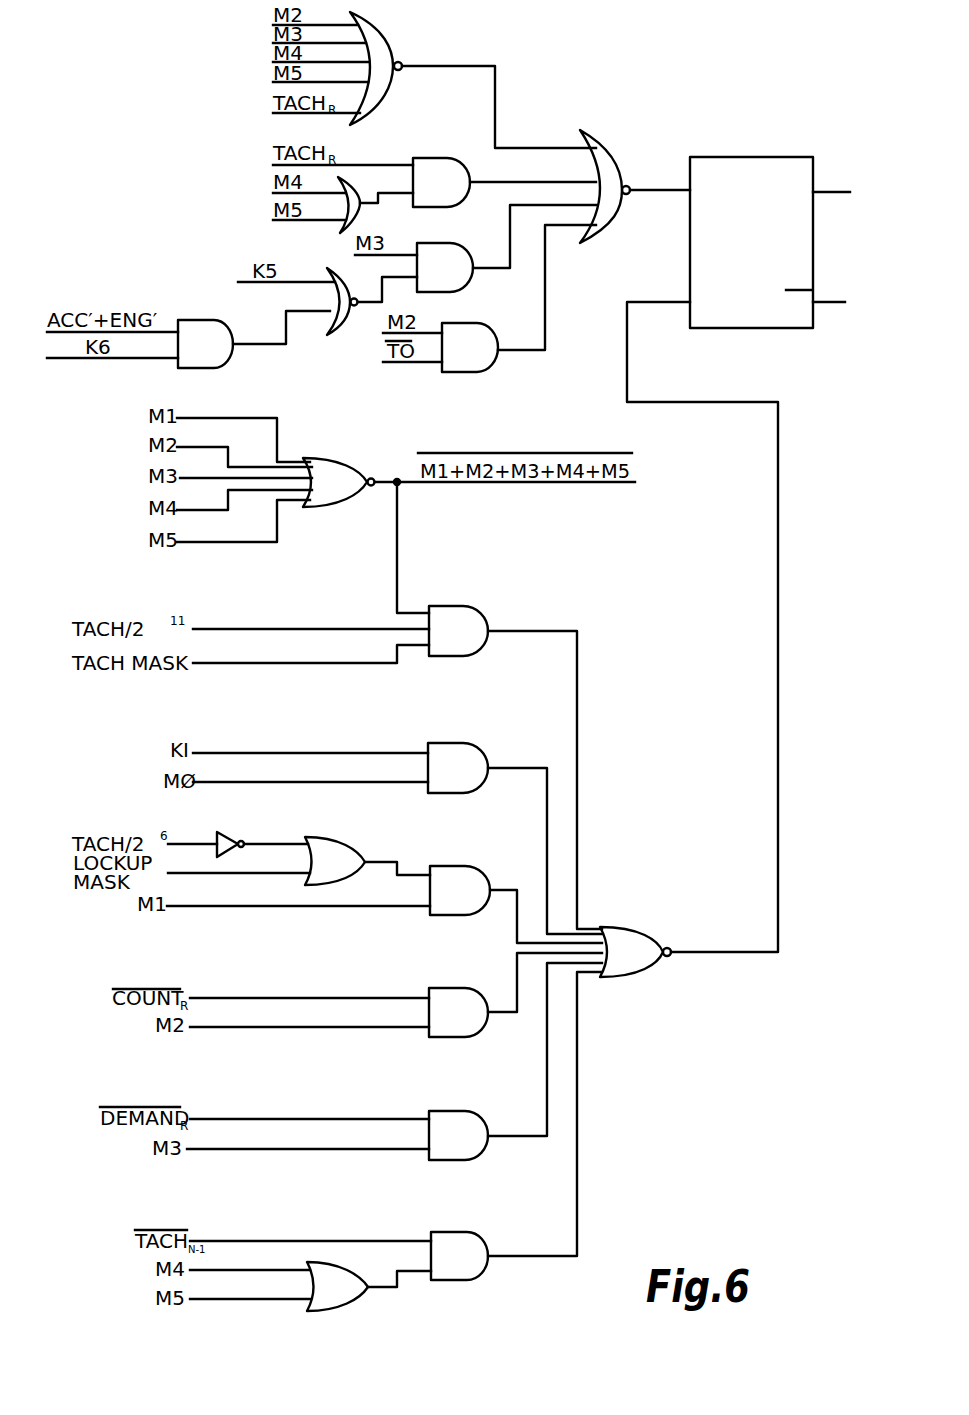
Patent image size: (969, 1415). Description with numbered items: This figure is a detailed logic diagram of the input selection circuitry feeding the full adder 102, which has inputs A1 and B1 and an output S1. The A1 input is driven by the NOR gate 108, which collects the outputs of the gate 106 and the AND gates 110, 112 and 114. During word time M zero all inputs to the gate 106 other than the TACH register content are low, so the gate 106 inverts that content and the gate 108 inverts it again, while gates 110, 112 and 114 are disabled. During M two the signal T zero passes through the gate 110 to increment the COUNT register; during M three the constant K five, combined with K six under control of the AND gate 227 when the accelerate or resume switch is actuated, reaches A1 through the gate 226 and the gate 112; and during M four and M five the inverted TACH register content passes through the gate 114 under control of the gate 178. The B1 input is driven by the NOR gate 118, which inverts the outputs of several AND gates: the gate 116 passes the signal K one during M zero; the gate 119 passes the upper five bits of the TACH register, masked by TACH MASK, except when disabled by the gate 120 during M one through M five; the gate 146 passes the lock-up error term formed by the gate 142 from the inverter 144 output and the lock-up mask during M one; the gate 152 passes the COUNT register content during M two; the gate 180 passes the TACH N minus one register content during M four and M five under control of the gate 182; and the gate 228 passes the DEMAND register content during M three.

The full adder 102 is at (752, 180).
The gate 106 is at (378, 40).
The gate 108 is at (605, 172).
The gate 110 is at (468, 358).
The gate 112 is at (447, 275).
The gate 114 is at (440, 175).
The gate 116 is at (458, 755).
The NOR gate 118 is at (627, 940).
The gate 119 is at (465, 623).
The gate 120 is at (320, 473).
The gate 142 is at (333, 850).
The inverter 144 is at (227, 840).
The gate 146 is at (460, 877).
The gate 152 is at (457, 1003).
The gate 178 is at (342, 227).
The gate 180 is at (457, 1250).
The gate 182 is at (347, 1292).
The gate 226 is at (340, 325).
The AND gate 227 is at (202, 333).
The gate 228 is at (460, 1127).